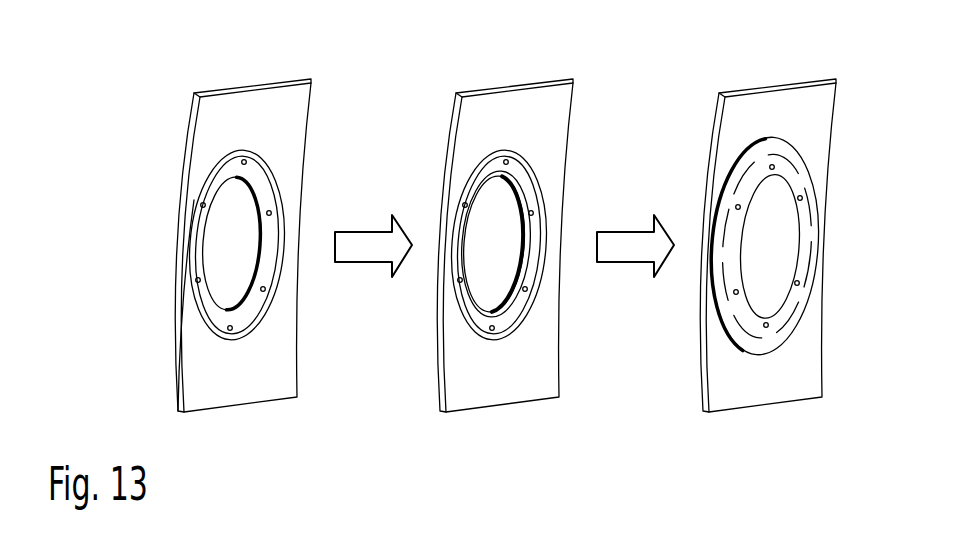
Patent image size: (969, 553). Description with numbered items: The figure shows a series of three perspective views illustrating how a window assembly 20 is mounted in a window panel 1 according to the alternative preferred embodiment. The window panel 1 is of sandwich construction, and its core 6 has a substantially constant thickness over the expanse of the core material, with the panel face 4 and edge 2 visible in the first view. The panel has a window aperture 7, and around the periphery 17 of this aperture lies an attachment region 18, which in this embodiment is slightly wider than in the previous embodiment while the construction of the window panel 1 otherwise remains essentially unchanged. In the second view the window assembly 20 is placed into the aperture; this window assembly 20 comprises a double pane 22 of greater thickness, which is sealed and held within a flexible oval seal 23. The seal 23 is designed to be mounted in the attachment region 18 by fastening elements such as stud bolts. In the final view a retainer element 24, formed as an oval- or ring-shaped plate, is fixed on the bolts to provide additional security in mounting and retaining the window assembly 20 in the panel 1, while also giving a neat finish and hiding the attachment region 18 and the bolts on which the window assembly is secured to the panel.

The window panel 1 is at (165, 88).
The wall / panel plate 2 is at (178, 375).
The outer side of panel 4 is at (283, 386).
The core 6 is at (179, 275).
The window aperture 7 is at (220, 240).
The periphery 17 is at (228, 173).
The attachment region 18 is at (208, 305).
The window assembly 20 is at (507, 277).
The double pane 22 is at (508, 202).
The flexible oval seal 23 is at (467, 274).
The retainer element 24 is at (803, 262).